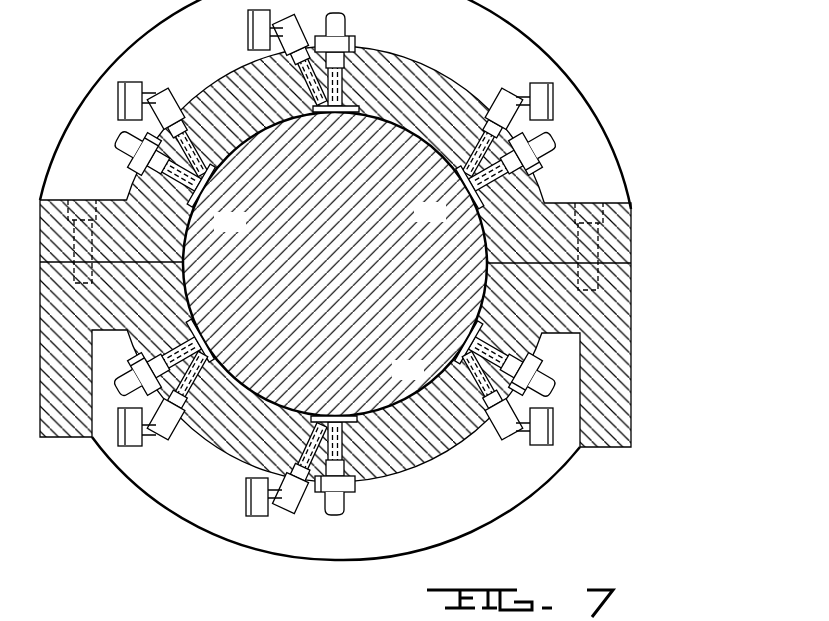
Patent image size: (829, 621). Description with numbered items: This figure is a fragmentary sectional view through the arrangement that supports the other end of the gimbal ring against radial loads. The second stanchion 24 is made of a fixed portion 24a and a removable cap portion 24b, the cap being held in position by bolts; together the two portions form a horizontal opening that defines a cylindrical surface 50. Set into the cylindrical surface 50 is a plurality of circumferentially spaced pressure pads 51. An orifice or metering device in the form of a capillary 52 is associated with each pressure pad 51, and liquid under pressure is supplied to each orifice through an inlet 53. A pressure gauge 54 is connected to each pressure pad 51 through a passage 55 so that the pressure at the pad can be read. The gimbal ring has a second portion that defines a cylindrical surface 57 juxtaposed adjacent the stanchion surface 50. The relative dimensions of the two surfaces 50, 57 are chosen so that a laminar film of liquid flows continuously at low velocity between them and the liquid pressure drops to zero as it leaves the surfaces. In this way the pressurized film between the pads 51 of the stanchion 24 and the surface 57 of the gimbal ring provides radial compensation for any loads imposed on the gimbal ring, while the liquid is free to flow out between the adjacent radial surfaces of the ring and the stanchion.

The second stanchion 24 is at (530, 465).
The fixed portion 24a is at (631, 298).
The removable cap portion 24b is at (631, 242).
The cylindrical surface 50 is at (406, 130).
The pressure pads 51 is at (201, 190).
The capillary 52 is at (493, 187).
The inlet 53 is at (343, 503).
The pressure gauge 54 is at (133, 86).
The passage 55 is at (202, 113).
The cylindrical surface 57 is at (217, 432).